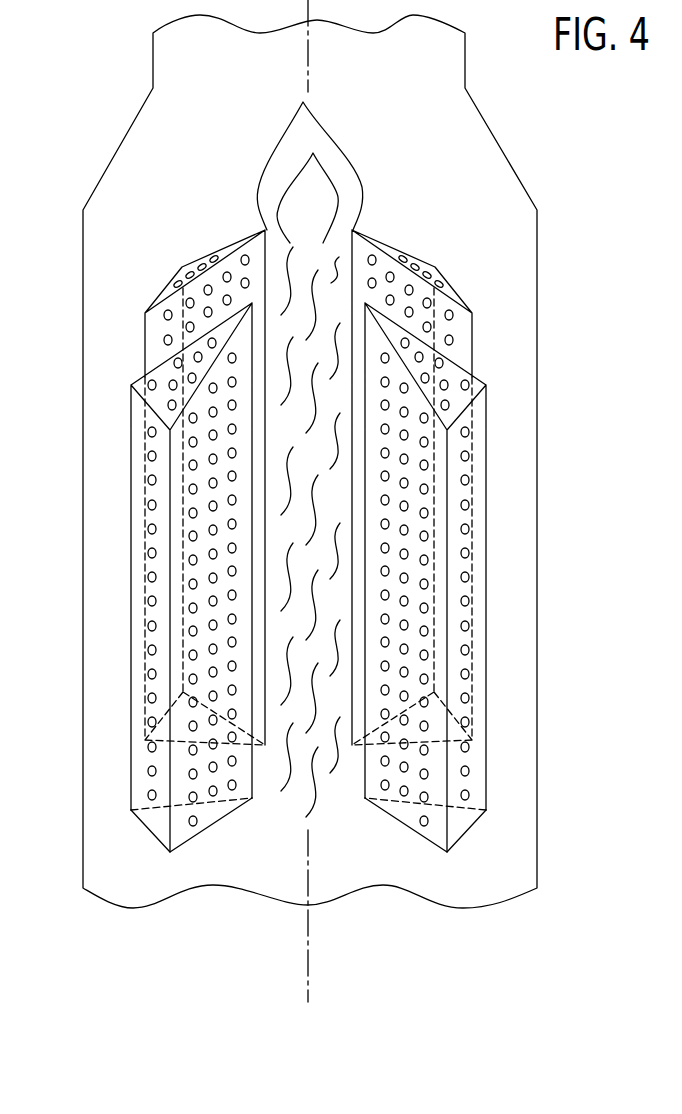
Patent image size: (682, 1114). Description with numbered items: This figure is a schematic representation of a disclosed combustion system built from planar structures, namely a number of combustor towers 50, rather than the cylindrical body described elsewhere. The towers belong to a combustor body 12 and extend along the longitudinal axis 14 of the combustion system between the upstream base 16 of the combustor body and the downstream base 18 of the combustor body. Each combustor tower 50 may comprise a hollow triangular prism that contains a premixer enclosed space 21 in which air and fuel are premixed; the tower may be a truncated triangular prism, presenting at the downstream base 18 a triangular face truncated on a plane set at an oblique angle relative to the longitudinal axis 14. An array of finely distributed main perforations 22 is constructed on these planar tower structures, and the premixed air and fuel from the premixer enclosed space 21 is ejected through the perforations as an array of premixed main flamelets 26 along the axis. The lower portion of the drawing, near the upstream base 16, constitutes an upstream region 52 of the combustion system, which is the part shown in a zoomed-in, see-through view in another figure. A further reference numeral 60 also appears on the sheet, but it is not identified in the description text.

The combustor body 12 is at (517, 589).
The longitudinal axis 14 is at (309, 67).
The upstream base 16 is at (348, 827).
The downstream base 18 is at (365, 217).
The premixer enclosed space 21 is at (457, 816).
The main perforations 22 is at (465, 478).
The premixed main flamelets 26 is at (346, 143).
The combustor towers 50 is at (486, 694).
The upstream region 52 is at (512, 767).
The adjacent component 60 is at (681, 1108).